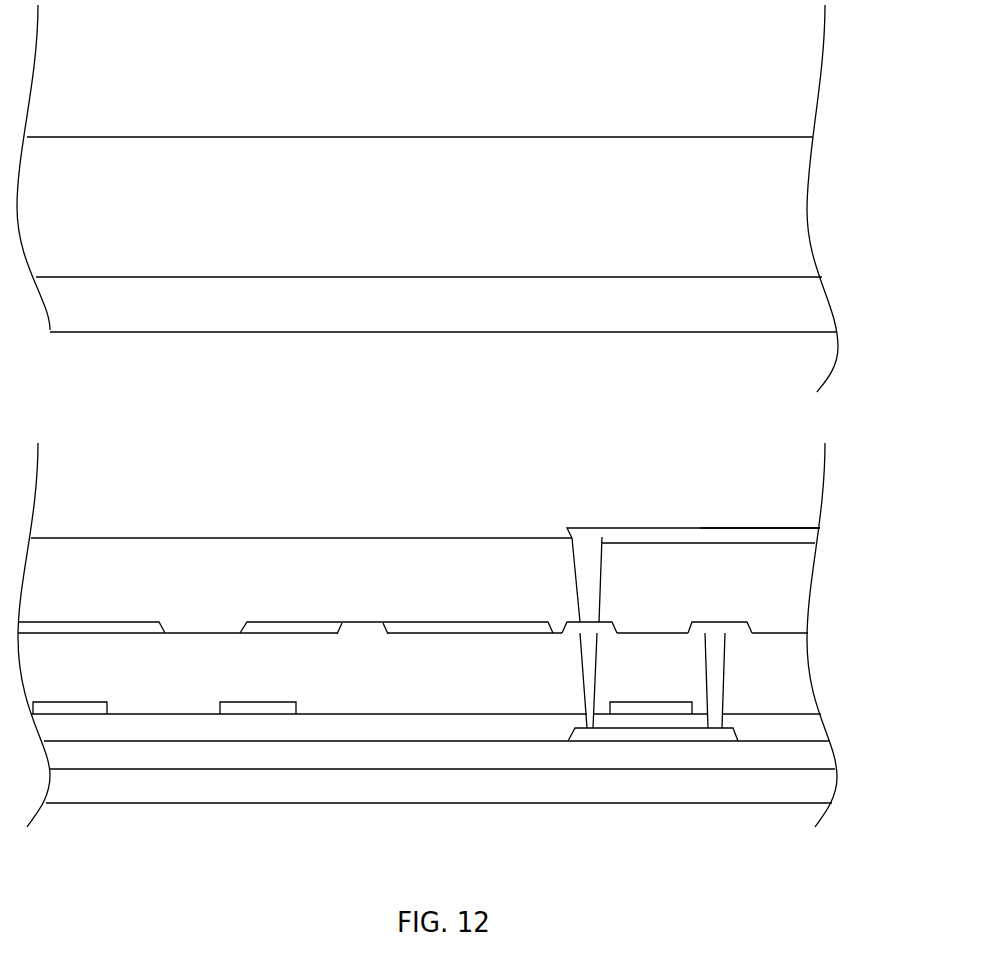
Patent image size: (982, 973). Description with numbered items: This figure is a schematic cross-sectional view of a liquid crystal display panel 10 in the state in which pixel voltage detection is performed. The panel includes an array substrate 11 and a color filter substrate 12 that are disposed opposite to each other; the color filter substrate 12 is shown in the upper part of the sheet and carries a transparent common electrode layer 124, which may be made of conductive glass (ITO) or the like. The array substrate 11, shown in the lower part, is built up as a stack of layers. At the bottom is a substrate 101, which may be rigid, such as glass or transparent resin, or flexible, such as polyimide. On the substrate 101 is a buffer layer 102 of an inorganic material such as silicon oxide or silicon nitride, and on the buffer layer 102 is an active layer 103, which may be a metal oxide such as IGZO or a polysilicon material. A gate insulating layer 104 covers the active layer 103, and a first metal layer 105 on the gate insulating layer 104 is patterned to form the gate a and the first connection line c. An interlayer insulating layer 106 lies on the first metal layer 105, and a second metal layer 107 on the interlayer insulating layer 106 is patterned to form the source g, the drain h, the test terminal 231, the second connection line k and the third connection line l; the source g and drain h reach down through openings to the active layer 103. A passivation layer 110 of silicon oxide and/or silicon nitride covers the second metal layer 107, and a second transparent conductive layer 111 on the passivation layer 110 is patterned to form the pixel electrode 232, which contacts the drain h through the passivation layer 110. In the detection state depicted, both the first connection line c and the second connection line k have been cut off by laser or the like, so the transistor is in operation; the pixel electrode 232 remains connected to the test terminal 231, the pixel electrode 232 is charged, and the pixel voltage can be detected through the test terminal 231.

The liquid crystal display panel 10 is at (110, 84).
The color filter substrate 12 is at (772, 137).
The transparent common electrode layer 124 is at (807, 328).
The array substrate 11 is at (167, 537).
The second transparent conductive layer 111 is at (798, 530).
The passivation layer 110 is at (773, 593).
The second metal layer 107 is at (745, 632).
The interlayer insulating layer 106 is at (778, 660).
The first metal layer 105 is at (692, 707).
The gate insulating layer 104 is at (818, 732).
The active layer 103 is at (723, 730).
The buffer layer 102 is at (825, 758).
The substrate 101 is at (828, 792).
The test terminal 231 is at (375, 627).
The pixel electrode 232 is at (742, 535).
The second connection line k is at (280, 629).
The third connection line l is at (545, 627).
The drain h is at (588, 627).
The source g is at (715, 627).
The gate a is at (628, 707).
The first connection line c is at (72, 707).